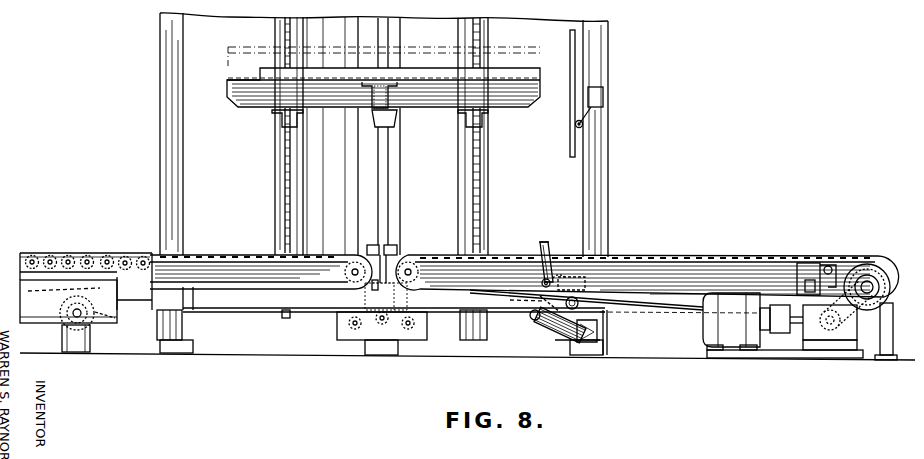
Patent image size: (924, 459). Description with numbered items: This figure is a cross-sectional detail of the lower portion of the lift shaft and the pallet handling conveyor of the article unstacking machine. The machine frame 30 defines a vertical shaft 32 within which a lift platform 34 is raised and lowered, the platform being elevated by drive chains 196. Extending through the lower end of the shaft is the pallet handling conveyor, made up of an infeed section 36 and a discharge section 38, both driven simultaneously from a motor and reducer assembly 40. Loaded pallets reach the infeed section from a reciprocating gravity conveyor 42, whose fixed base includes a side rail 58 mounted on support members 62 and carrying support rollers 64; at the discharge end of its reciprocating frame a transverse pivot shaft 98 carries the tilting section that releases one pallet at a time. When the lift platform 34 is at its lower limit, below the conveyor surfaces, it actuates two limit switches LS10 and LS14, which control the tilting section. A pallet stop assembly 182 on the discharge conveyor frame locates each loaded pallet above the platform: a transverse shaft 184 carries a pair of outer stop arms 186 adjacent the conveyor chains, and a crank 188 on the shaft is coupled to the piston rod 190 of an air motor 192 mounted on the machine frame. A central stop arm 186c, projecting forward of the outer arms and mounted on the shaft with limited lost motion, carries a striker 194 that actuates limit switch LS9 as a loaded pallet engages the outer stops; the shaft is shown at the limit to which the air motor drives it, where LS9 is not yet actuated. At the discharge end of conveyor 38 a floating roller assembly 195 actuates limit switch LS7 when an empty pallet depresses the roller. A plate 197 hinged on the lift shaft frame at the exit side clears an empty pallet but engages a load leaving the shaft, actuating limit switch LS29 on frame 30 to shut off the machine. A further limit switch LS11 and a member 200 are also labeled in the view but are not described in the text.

The frame 30 is at (608, 142).
The vertical shaft 32 is at (530, 157).
The lift platform 34 is at (538, 73).
The infeed section 36 is at (246, 253).
The discharge section 38 is at (659, 257).
The motor and reducer assembly 40 is at (732, 326).
The reciprocating gravity conveyor 42 is at (61, 254).
The side rail 58 is at (33, 316).
The support member 62 is at (84, 346).
The support roller 64 is at (112, 317).
The pivot shaft 98 is at (95, 290).
The pallet stop assembly 182 is at (548, 233).
The shaft 184 is at (541, 283).
The outer stop arms 186 is at (550, 257).
The central stop arm 186c is at (540, 243).
The crank 188 is at (514, 300).
The piston rod 190 is at (538, 318).
The air motor 192 is at (558, 331).
The striker 194 is at (562, 280).
The floating roller assembly 195 is at (831, 258).
The drive chains 196 is at (287, 172).
The plate 197 is at (570, 142).
The plunger rod 200 is at (392, 201).
The limit switch LS7 is at (808, 263).
The limit switch LS9 is at (586, 284).
The limit switch LS10 is at (398, 249).
The limit switch LS11 is at (372, 286).
The limit switch LS14 is at (367, 248).
The limit switch LS29 is at (603, 97).